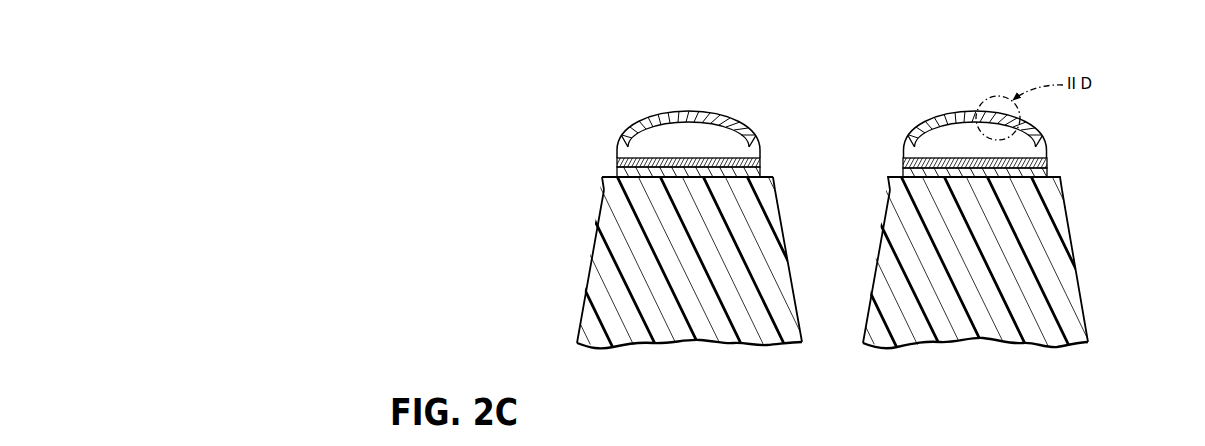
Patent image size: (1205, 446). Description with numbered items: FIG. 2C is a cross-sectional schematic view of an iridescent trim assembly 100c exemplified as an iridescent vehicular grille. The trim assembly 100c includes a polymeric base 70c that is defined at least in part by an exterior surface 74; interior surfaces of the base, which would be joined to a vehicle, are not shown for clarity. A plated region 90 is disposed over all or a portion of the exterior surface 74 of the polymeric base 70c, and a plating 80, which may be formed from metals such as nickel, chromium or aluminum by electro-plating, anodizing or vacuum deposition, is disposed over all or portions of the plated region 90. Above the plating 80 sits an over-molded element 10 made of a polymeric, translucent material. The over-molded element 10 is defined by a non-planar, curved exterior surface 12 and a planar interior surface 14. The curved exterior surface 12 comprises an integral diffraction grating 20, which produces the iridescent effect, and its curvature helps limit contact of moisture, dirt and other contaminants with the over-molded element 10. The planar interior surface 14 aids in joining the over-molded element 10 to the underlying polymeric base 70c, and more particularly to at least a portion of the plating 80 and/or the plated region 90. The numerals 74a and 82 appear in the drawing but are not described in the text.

The iridescent trim assembly 100c is at (532, 115).
The over-molded element 10 is at (667, 152).
The exterior surface 12 is at (663, 107).
The diffraction grating 20 is at (703, 112).
The interior surface 14 is at (710, 151).
The exterior surface 74 is at (606, 183).
The recess bottom surface 74a is at (718, 182).
The plating 80 is at (753, 182).
The polymeric base 70c is at (703, 283).
The cavity 82 is at (937, 152).
The plated region 90 is at (920, 179).